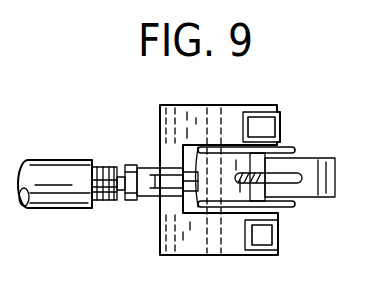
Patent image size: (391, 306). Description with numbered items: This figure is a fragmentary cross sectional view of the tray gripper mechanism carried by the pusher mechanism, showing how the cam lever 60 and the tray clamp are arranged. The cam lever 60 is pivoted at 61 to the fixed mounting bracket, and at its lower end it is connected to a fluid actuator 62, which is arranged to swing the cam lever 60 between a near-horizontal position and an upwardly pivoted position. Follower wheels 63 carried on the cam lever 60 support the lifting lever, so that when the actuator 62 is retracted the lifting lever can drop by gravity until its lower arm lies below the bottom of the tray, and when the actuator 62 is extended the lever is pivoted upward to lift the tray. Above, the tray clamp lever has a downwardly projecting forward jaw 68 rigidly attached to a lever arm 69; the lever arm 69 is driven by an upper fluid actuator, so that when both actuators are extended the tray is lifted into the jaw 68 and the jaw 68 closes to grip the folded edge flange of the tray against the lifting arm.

The cam lever 60 is at (230, 238).
The pivot 61 is at (225, 115).
The fluid actuator 62 is at (60, 163).
The follower wheels 63 is at (278, 233).
The forward jaw 68 is at (318, 158).
The lever arm 69 is at (276, 178).